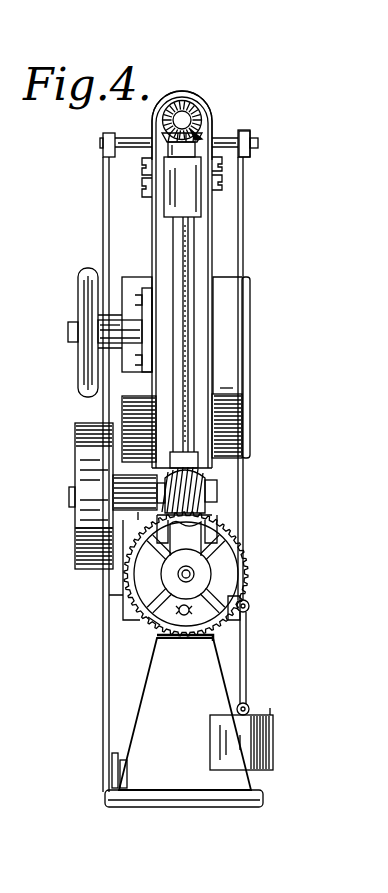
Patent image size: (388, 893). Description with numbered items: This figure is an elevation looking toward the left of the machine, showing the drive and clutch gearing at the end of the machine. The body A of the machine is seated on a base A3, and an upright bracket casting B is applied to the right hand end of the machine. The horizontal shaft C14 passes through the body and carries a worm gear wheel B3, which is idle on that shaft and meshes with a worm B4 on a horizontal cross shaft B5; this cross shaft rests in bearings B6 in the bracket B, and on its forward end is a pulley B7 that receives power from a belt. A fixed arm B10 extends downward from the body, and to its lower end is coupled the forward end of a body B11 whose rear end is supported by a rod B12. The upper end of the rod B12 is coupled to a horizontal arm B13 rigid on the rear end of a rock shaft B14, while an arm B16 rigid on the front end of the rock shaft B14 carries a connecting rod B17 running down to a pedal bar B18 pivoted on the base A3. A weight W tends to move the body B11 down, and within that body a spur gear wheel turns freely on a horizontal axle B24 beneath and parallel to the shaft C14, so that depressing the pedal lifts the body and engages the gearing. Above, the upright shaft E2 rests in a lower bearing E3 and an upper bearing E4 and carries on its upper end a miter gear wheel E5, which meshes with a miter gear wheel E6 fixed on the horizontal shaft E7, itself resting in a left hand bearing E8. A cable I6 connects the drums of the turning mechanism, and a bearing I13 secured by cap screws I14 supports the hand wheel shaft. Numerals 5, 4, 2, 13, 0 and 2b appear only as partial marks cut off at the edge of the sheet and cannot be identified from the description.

The upright bracket casting B is at (206, 252).
The left hand bearing E8 is at (160, 95).
The horizontal shaft E7 is at (174, 112).
The miter gear wheel E6 is at (200, 124).
The miter gear wheel E5 is at (203, 136).
The upper bearing E4 is at (187, 203).
The upright shaft E2 is at (183, 318).
The lower bearing E3 is at (246, 416).
The rock shaft B14 is at (133, 140).
The horizontal arm B13 is at (245, 157).
The arm B16 is at (109, 152).
The metal strap or wire cable I6 is at (226, 182).
The cap screws I14 is at (128, 355).
The bearing I13 is at (100, 348).
The handwheel 5 is at (82, 308).
The knob 4 is at (40, 364).
The shaft 2 is at (61, 313).
The hub 13 is at (60, 349).
The body of the machine A is at (234, 368).
The rod B12 is at (245, 381).
The pulley B7 is at (80, 547).
The gear portion 0 is at (56, 550).
The horizontal cross shaft B5 is at (72, 498).
The bearings B6 is at (127, 488).
The worm B4 is at (218, 488).
The fixed arm B10 is at (184, 575).
The wheel hub 2b is at (165, 582).
The horizontal shaft C14 is at (150, 620).
The body B11 is at (244, 614).
The worm gear wheel B3 is at (242, 622).
The axle B24 is at (184, 615).
The base A3 is at (155, 713).
The connecting rod B17 is at (62, 762).
The pedal bar B18 is at (112, 773).
The weight W is at (248, 747).